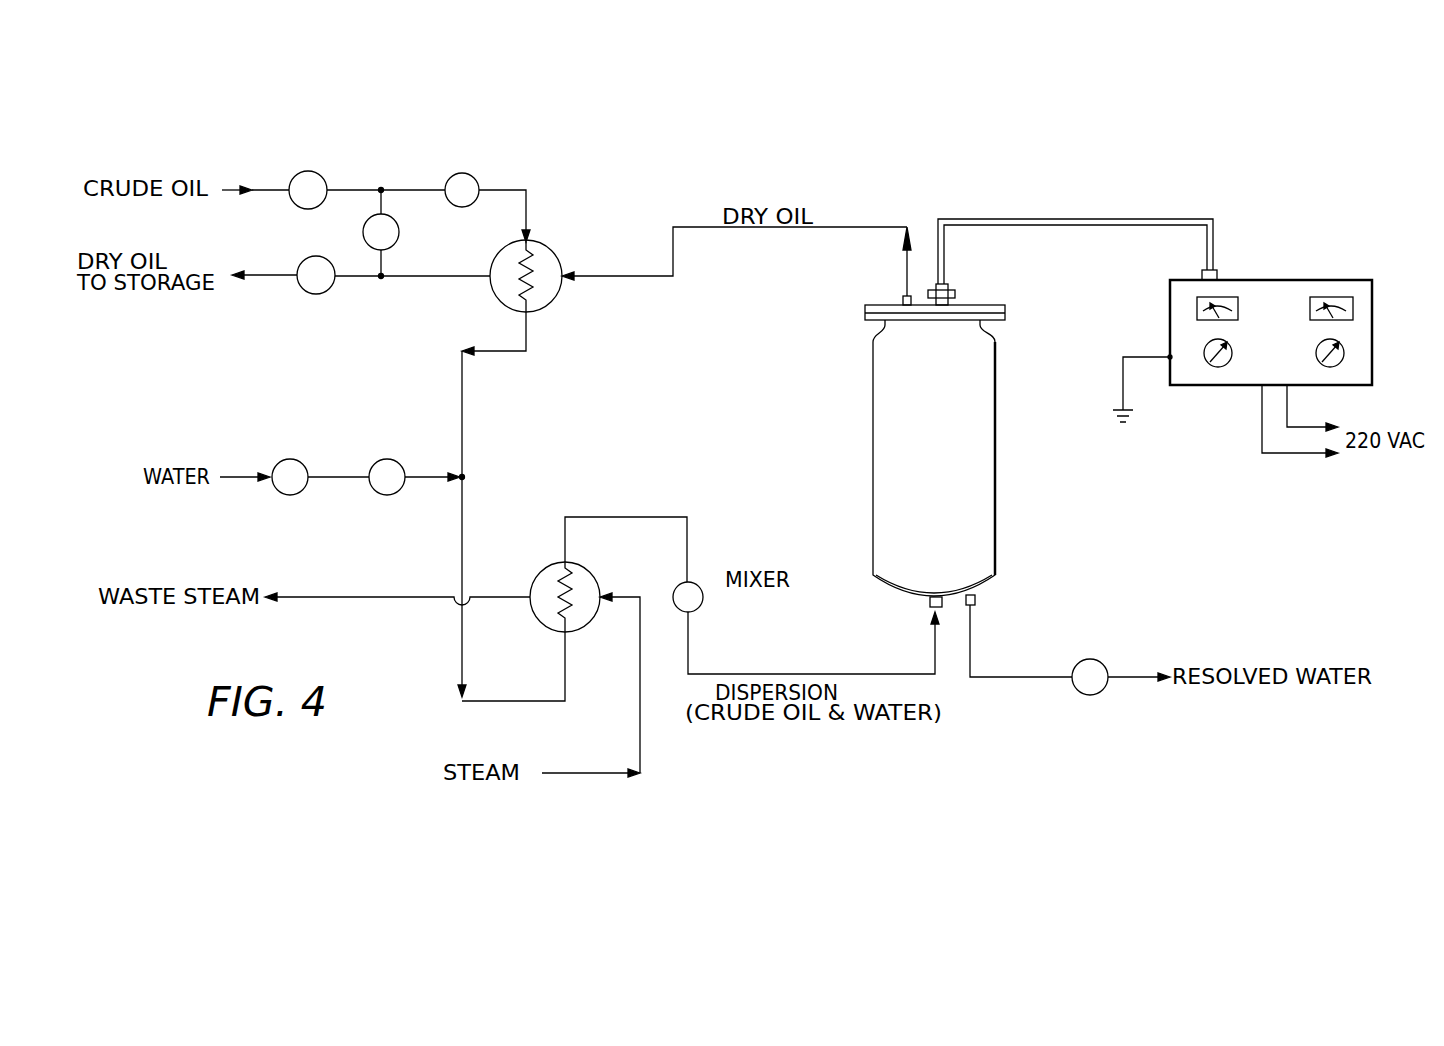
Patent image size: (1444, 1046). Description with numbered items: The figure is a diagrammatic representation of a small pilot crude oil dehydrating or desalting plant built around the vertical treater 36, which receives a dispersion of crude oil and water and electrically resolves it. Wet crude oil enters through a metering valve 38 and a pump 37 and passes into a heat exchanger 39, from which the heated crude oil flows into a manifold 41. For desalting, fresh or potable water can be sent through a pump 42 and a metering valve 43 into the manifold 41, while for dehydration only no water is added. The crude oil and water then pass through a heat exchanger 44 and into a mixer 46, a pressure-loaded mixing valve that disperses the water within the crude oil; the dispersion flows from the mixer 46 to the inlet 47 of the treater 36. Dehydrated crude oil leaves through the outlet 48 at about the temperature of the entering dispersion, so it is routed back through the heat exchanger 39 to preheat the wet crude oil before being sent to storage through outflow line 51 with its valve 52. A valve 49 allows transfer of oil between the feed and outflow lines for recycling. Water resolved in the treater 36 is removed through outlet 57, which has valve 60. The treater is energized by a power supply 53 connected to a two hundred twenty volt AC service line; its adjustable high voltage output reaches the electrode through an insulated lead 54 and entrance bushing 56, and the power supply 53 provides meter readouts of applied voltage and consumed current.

The treater 36 is at (960, 535).
The pump 37 is at (465, 173).
The metering valve 38 is at (308, 171).
The heat exchanger 39 is at (547, 246).
The manifold 41 is at (462, 387).
The pump 42 is at (287, 459).
The metering valve 43 is at (385, 459).
The heat exchanger 44 is at (552, 563).
The mixer 46 is at (695, 583).
The inlet 47 is at (927, 600).
The outlet 48 is at (901, 298).
The valve 49 is at (399, 232).
The outflow line 51 is at (271, 274).
The valve 52 is at (328, 291).
The power supply 53 is at (1280, 280).
The insulated lead 54 is at (993, 218).
The entrance bushing 56 is at (955, 300).
The outlet 57 is at (977, 600).
The valve 60 is at (1090, 659).